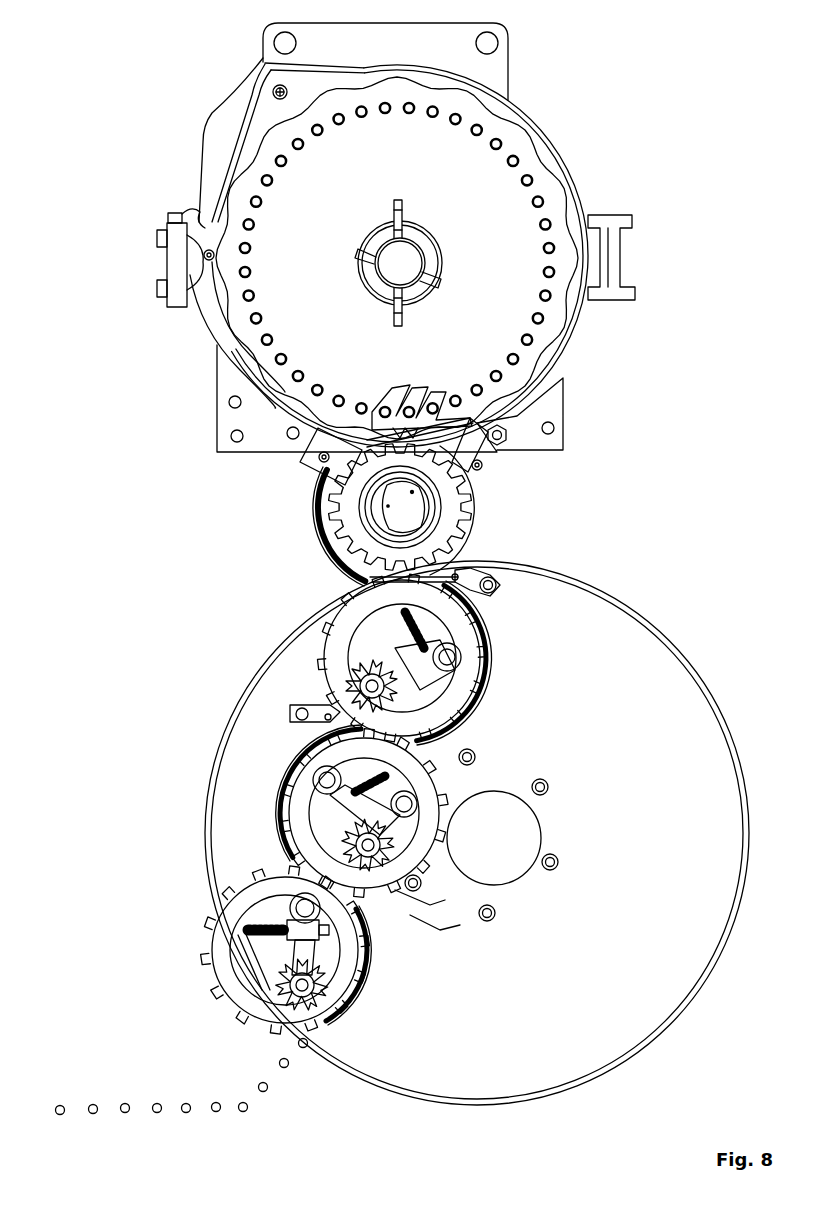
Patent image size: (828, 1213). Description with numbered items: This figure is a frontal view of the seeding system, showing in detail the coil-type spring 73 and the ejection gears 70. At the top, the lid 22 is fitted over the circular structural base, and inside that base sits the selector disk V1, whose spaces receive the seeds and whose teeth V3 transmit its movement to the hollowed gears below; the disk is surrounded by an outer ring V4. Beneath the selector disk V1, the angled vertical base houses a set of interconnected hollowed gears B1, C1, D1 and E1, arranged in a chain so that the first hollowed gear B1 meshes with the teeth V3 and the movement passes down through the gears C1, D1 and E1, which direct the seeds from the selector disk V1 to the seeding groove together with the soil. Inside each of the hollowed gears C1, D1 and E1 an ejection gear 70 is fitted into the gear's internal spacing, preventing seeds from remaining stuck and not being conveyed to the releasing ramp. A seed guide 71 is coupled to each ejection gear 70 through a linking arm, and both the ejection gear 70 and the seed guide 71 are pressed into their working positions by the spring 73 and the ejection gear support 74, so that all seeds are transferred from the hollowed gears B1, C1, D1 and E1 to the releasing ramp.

The lid 22 is at (508, 71).
The outer ring V4 is at (550, 168).
The selector disk V1 is at (505, 332).
The teeth V3 is at (440, 415).
The hollowed gear B1 is at (393, 513).
The seed guide 71 is at (472, 576).
The hollowed gear C1 is at (462, 624).
The hollowed gear D1 is at (313, 763).
The hollowed gear E1 is at (275, 1018).
The ejection gear 70 is at (371, 684).
The spring 73 is at (410, 635).
The ejection gear support 74 is at (435, 663).